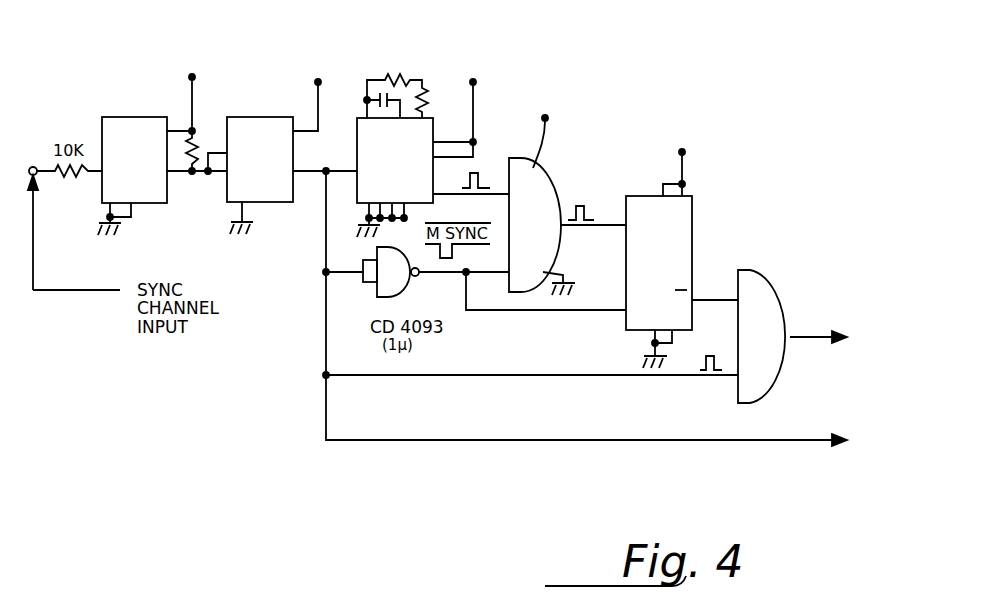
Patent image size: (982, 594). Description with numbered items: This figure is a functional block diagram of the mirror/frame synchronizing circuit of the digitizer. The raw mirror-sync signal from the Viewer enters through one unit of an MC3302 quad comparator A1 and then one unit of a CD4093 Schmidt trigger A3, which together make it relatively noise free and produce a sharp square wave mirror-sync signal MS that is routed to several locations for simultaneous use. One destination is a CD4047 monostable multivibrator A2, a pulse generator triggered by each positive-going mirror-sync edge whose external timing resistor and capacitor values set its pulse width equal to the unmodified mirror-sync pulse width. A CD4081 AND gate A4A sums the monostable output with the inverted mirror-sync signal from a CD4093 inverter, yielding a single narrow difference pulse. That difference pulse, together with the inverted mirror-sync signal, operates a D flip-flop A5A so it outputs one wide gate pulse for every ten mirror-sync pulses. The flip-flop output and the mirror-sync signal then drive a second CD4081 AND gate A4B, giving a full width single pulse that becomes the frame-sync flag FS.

The quad comparator A1 is at (157, 204).
The monostable multivibrator A2 is at (357, 142).
The Schmidt trigger A3 is at (283, 203).
The AND gate A4A is at (509, 173).
The AND gate A4B is at (780, 293).
The D flip-flop A5A is at (692, 228).
The mirror-sync signal MS is at (721, 440).
The frame-sync flag FS is at (846, 300).